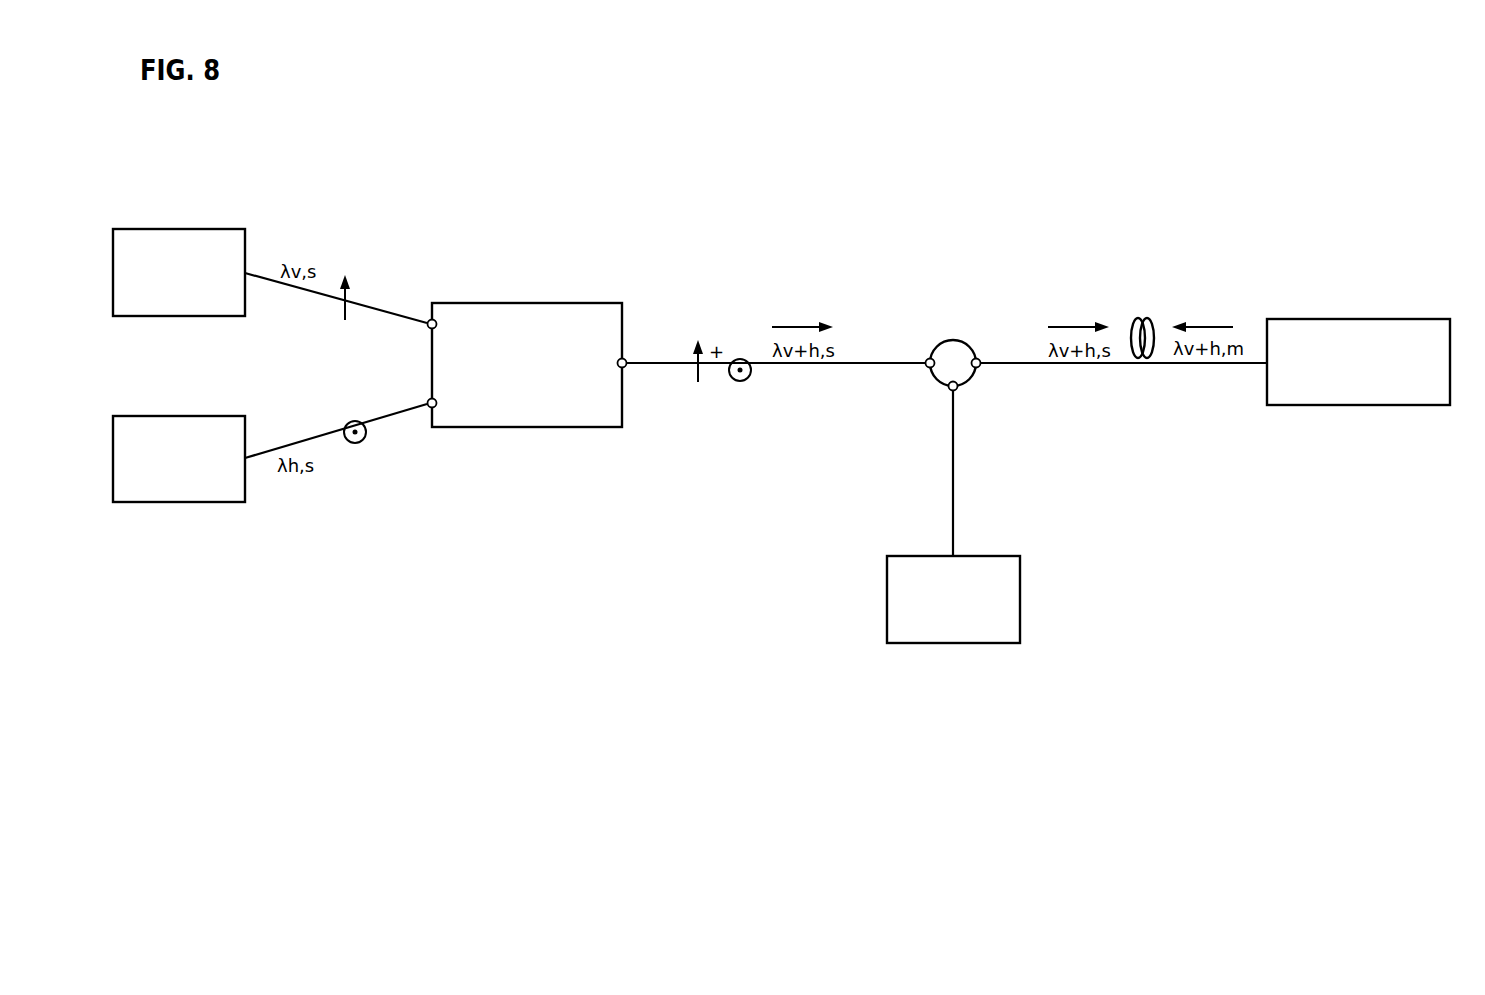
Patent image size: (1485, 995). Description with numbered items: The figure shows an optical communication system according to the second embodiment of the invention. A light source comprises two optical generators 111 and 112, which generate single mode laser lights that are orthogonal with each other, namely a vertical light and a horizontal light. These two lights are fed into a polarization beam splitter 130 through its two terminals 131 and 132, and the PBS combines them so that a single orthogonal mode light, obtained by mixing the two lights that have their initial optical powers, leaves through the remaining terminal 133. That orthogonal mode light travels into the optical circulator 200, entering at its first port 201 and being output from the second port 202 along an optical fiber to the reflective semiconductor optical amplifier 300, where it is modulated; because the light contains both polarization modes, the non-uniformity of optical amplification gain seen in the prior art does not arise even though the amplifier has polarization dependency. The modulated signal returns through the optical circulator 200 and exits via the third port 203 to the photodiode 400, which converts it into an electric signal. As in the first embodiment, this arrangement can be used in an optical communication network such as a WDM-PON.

The optical generator 111 is at (180, 228).
The optical generator 112 is at (180, 415).
The polarization beam splitter 130 is at (525, 302).
The first input port of polarization beam splitter 131 is at (431, 319).
The second input port of polarization beam splitter 132 is at (431, 408).
The output port of polarization beam splitter 133 is at (626, 359).
The optical circulator 200 is at (955, 340).
The first port of optical circulator 201 is at (927, 359).
The second port 202 is at (980, 359).
The third port of optical circulator 203 is at (950, 392).
The reflective semiconductor optical amplifier 300 is at (1358, 318).
The photodiode 400 is at (990, 555).